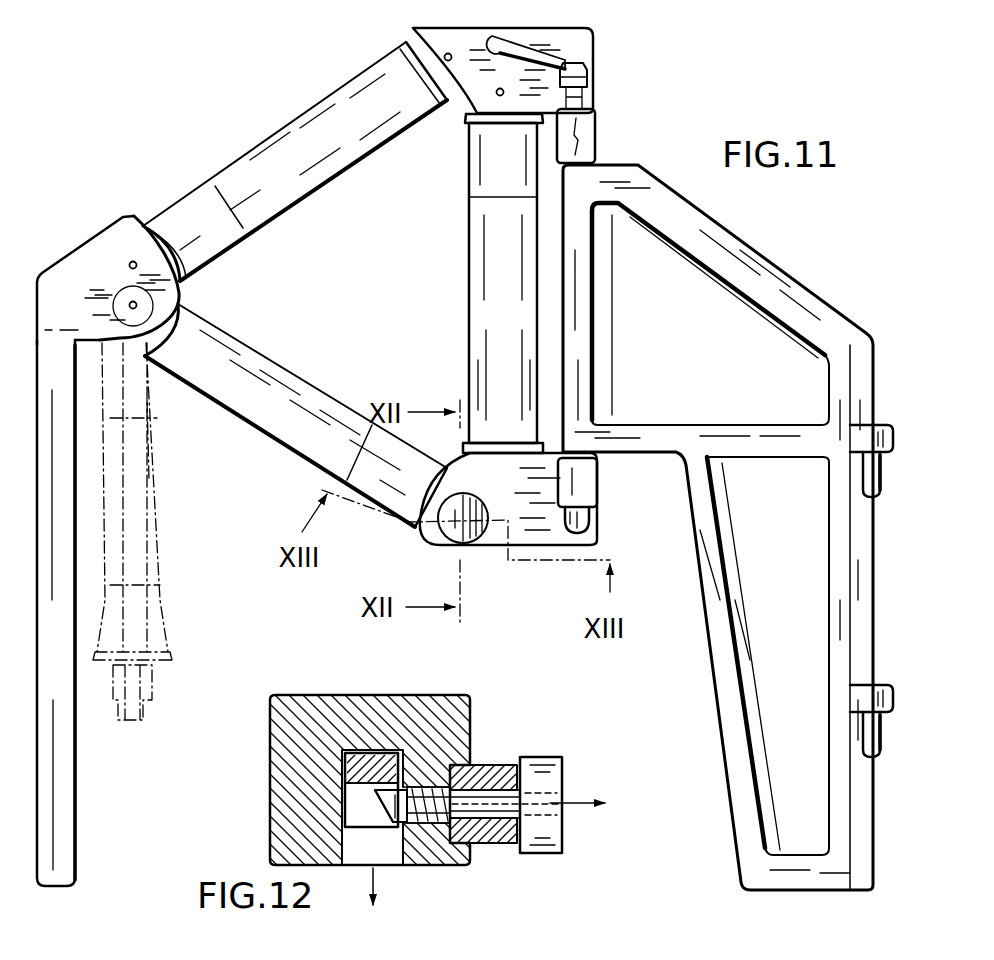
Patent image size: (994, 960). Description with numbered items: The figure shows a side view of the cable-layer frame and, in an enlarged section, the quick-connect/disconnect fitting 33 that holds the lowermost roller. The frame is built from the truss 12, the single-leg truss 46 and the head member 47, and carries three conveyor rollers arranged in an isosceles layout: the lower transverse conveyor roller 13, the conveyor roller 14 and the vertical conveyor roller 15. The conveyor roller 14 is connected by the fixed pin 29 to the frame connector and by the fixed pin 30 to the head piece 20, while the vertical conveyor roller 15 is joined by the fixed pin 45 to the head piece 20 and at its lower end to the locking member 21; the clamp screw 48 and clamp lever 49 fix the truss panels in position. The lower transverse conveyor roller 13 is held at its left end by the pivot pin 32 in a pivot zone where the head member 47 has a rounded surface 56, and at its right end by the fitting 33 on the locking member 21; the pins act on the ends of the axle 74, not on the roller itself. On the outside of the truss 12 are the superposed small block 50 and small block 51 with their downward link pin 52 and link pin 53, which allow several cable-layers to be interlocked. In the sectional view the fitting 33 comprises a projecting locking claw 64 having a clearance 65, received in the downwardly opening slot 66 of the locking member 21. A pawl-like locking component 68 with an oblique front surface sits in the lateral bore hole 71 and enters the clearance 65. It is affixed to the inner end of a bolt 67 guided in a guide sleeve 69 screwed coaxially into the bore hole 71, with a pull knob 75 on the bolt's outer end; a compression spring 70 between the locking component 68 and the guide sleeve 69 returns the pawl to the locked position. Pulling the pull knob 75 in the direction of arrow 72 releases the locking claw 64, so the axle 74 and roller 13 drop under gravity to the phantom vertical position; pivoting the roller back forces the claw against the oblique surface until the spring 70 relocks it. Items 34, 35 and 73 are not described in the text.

In FIG. 11, the truss 12 is at (778, 253).
In FIG. 11, the lower transverse conveyor roller 13 is at (330, 390).
In FIG. 11, the conveyor roller 14 is at (255, 140).
In FIG. 11, the vertical conveyor roller 15 is at (467, 258).
In FIG. 11, the head piece 20 is at (565, 46).
In FIG. 11, the locking member 21 is at (502, 501).
In FIG. 12, the locking member 21 is at (423, 722).
In FIG. 11, the fixed pin 29 is at (131, 261).
In FIG. 11, the fixed pin 30 is at (446, 54).
In FIG. 11, the pivot pin 32 is at (129, 305).
In FIG. 11, the quick-connect/disconnect fitting 33 is at (474, 549).
In FIG. 12, the quick-connect/disconnect fitting 33 is at (573, 772).
In FIG. 11, the upper bushing 34 is at (580, 133).
In FIG. 11, the lower bushing 35 is at (591, 483).
In FIG. 11, the fixed pin 45 is at (472, 112).
In FIG. 11, the truss 46 is at (65, 828).
In FIG. 11, the head member 47 is at (65, 287).
In FIG. 11, the clamp screw 48 is at (593, 81).
In FIG. 11, the clamp lever 49 is at (477, 84).
In FIG. 11, the small block 50 is at (855, 438).
In FIG. 11, the small block 51 is at (860, 698).
In FIG. 11, the link pin 52 is at (870, 478).
In FIG. 11, the link pin 53 is at (868, 738).
In FIG. 11, the rounded surface 56 is at (143, 283).
In FIG. 11, the locking claw 64 is at (150, 702).
In FIG. 12, the locking claw 64 is at (352, 750).
In FIG. 12, the clearance 65 is at (362, 808).
In FIG. 12, the downwardly opening slot 66 is at (392, 853).
In FIG. 12, the bolt 67 is at (503, 845).
In FIG. 12, the locking component 68 is at (370, 792).
In FIG. 12, the guide sleeve 69 is at (494, 767).
In FIG. 12, the compression spring 70 is at (440, 826).
In FIG. 12, the lateral bore hole 71 is at (440, 770).
In FIG. 12, the arrow 72 is at (575, 808).
In FIG. 12, the release direction arrow 73 is at (396, 912).
In FIG. 11, the axle 74 is at (143, 447).
In FIG. 12, the pull knob 75 is at (547, 833).